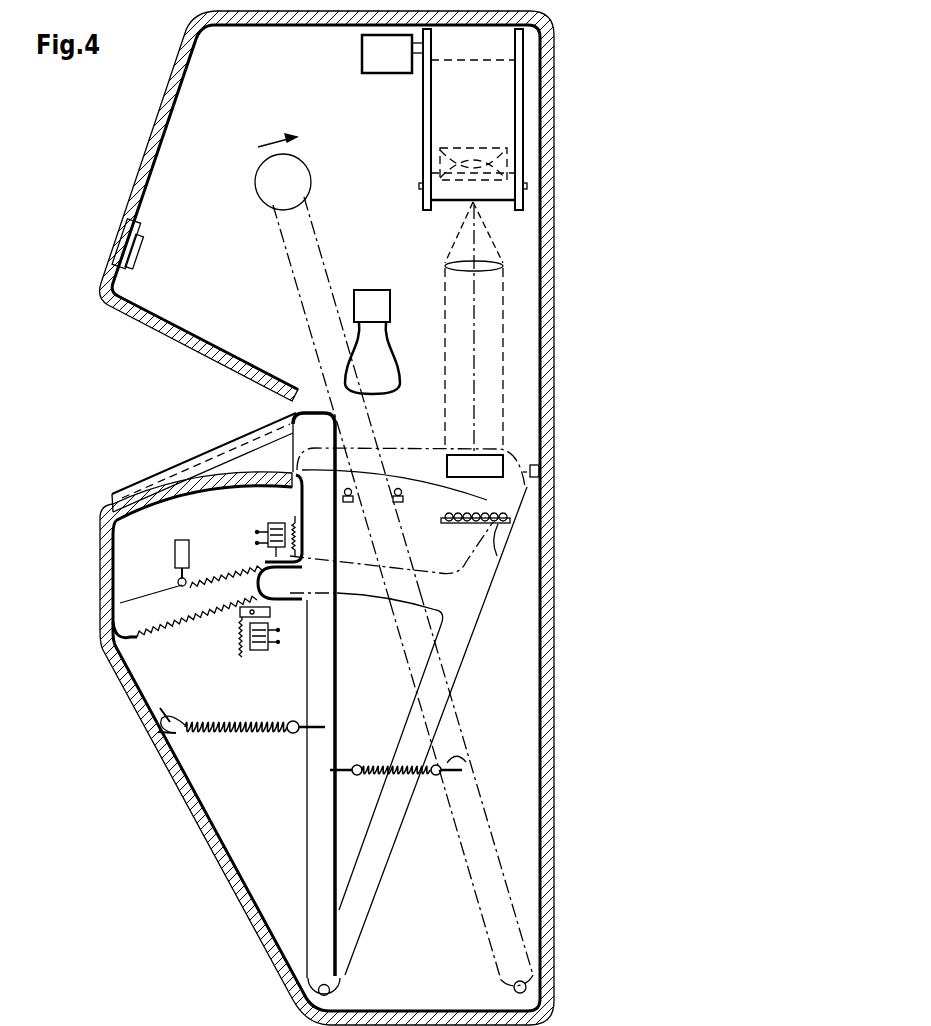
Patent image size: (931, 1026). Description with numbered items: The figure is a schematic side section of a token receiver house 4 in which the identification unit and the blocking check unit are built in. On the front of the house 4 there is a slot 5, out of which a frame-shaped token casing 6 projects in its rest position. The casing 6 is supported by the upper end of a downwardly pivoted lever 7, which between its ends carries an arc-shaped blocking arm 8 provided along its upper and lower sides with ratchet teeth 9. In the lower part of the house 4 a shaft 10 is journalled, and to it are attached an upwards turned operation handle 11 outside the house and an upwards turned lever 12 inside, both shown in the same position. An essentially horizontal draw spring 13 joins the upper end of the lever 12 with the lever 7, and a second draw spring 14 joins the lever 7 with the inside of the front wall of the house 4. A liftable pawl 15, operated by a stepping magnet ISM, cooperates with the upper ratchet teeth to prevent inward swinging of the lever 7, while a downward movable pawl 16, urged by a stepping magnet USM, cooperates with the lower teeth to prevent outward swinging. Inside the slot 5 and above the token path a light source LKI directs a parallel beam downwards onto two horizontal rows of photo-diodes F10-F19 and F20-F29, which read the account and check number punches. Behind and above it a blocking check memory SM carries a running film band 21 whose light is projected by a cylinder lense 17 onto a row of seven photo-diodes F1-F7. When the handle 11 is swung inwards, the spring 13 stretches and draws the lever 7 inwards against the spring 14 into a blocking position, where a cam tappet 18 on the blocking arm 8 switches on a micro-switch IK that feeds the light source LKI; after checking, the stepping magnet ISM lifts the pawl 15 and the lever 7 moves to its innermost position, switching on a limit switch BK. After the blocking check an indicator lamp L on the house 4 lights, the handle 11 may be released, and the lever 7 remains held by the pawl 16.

The token receiver house 4 is at (176, 148).
The slot 5 is at (160, 410).
The token casing 6 is at (170, 481).
The lever 7 is at (322, 846).
The blocking arm 8 is at (168, 608).
The ratchet teeth 9 is at (203, 602).
The shaft 10 is at (528, 985).
The operation handle 11 is at (312, 268).
The lever 12 is at (505, 904).
The draw spring 13 is at (385, 762).
The draw spring 14 is at (238, 741).
The pawl 15 is at (266, 560).
The pawl 16 is at (270, 613).
The cylinder lense 17 is at (452, 465).
The cam tappet 18 is at (153, 600).
The film band 21 is at (433, 116).
The indicator lamp L is at (112, 244).
The blocking check memory SM is at (422, 160).
The light source LKI is at (372, 340).
The limit switch BK is at (541, 472).
The stepping magnet ISM is at (279, 512).
The micro-switch IK is at (175, 550).
The stepping magnet USM is at (256, 650).
The row of photo-diodes F10-F19 is at (371, 514).
The row of photo-diodes F20-F29 is at (461, 534).
The row of photo-diodes F1-F7 is at (513, 550).